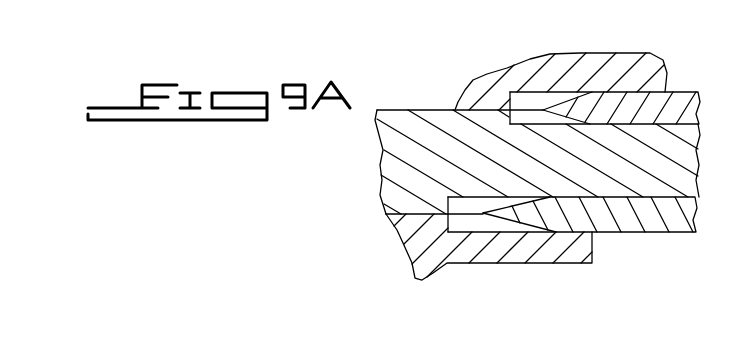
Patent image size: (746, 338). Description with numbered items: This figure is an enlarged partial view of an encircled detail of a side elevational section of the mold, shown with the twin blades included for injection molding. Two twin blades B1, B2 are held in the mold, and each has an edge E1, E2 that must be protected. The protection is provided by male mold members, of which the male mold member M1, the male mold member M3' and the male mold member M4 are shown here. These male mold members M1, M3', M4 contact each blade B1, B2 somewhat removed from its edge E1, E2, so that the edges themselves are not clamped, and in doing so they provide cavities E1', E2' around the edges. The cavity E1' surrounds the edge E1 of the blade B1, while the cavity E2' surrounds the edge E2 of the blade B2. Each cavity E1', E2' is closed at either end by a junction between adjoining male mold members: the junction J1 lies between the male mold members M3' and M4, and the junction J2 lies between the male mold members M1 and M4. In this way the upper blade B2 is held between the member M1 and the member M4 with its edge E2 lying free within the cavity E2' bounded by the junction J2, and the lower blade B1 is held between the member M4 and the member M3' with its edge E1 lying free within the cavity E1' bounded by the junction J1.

The male mold member M1 is at (633, 55).
The male mold member M4 is at (388, 187).
The male mold member M3' is at (489, 271).
The twin blade B2 is at (690, 96).
The twin blade B1 is at (643, 223).
The junction J2 is at (507, 110).
The junction J1 is at (456, 250).
The edge of twin blade E2 is at (532, 59).
The cavity E2' is at (560, 137).
The edge of twin blade E1 is at (505, 250).
The cavity E1' is at (518, 254).